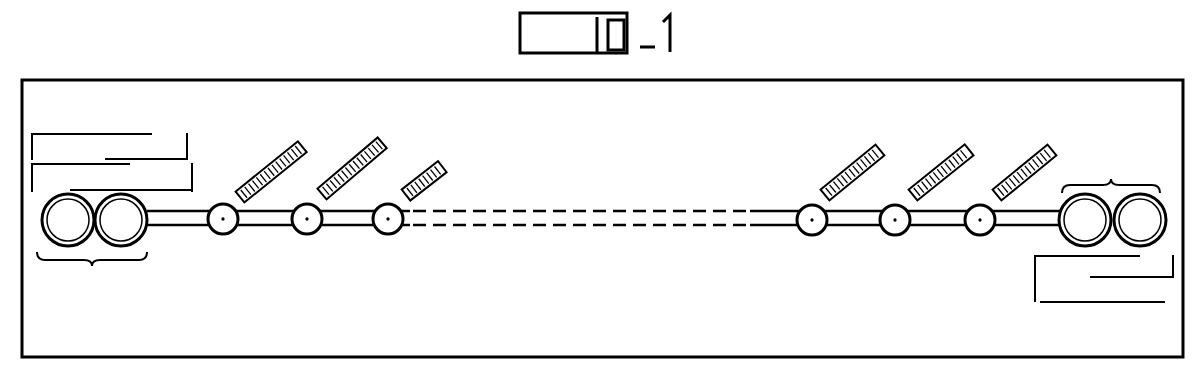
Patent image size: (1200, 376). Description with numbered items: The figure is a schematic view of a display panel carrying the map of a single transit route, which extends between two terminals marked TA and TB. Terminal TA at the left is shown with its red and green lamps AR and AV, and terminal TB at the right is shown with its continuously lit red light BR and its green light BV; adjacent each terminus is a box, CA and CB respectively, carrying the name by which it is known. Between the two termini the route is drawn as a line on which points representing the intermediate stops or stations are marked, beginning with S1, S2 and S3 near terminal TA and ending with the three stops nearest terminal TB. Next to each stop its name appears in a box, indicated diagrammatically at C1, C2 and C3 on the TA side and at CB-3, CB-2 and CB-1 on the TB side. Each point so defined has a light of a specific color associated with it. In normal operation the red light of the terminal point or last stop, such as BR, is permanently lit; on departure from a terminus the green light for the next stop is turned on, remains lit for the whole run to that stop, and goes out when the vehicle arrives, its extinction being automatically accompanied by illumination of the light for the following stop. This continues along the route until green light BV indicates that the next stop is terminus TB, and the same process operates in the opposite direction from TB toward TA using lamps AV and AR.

The terminal name box CA is at (112, 147).
The terminal TA is at (92, 276).
The red lamp AR is at (68, 220).
The green lamp AV is at (121, 220).
The intermediate stop S1 is at (223, 240).
The intermediate stop S2 is at (307, 240).
The intermediate stop S3 is at (389, 240).
The name box C1 is at (275, 155).
The name box C2 is at (361, 154).
The name box C3 is at (434, 168).
The name box CB-3 is at (869, 154).
The name box CB-2 is at (957, 154).
The name box CB-1 is at (1037, 154).
The terminus TB is at (1111, 172).
The green light BV is at (1085, 220).
The red light BR is at (1140, 220).
The terminal name box CB is at (1104, 295).